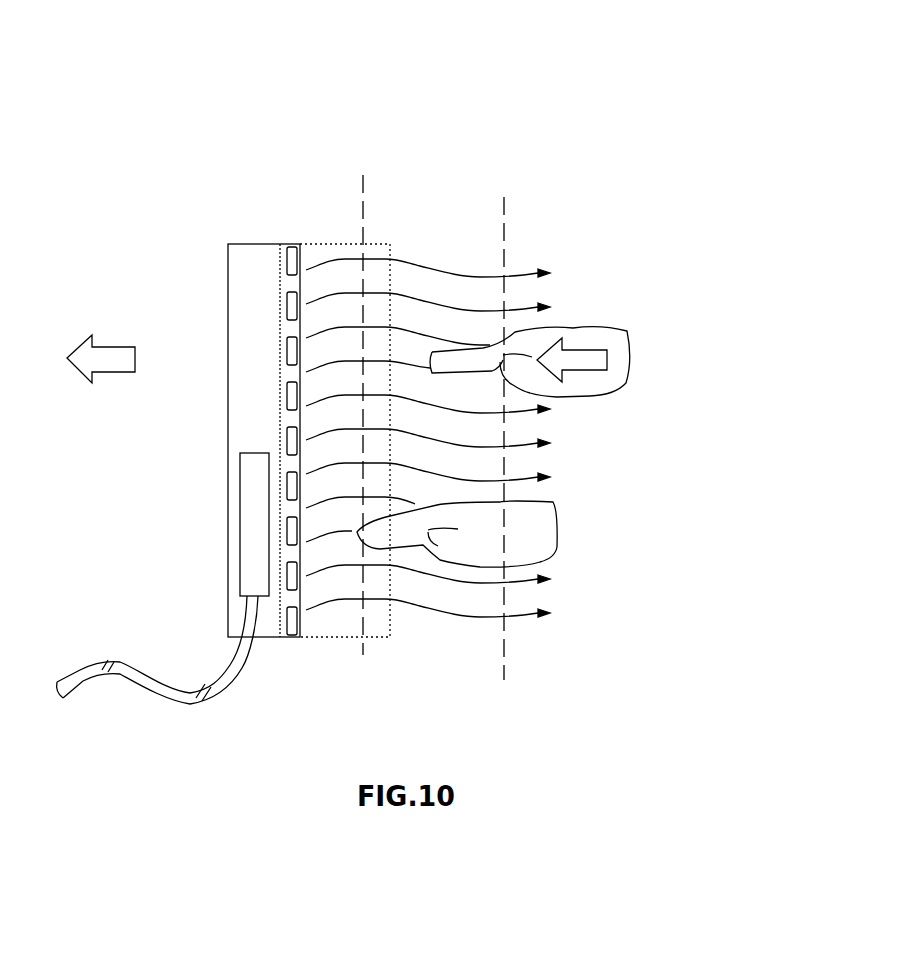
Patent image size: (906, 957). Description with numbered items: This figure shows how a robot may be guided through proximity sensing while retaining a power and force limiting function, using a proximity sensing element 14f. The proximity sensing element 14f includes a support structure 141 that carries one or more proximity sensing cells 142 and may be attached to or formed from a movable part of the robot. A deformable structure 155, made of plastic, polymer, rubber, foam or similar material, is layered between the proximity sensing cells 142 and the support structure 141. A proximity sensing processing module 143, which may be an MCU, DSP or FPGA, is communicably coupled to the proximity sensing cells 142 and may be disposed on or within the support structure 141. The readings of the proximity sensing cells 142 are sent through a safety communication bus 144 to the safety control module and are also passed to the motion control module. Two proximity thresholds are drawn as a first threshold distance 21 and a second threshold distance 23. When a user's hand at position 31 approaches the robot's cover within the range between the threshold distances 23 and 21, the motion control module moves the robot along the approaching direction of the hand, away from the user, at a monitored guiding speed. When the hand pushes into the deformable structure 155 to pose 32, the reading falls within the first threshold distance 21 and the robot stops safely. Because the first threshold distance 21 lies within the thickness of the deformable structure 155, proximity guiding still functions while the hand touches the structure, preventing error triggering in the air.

The proximity sensing element 14f is at (124, 67).
The support structure 141 is at (250, 397).
The proximity sensing cell 142 is at (287, 246).
The proximity sensing processing module 143 is at (260, 533).
The safety communication bus 144 is at (225, 695).
The deformable structure 155 is at (320, 250).
The first threshold distance 21 is at (383, 215).
The second threshold distance 23 is at (518, 222).
The hand position 31 is at (637, 327).
The hand pose 32 is at (578, 523).